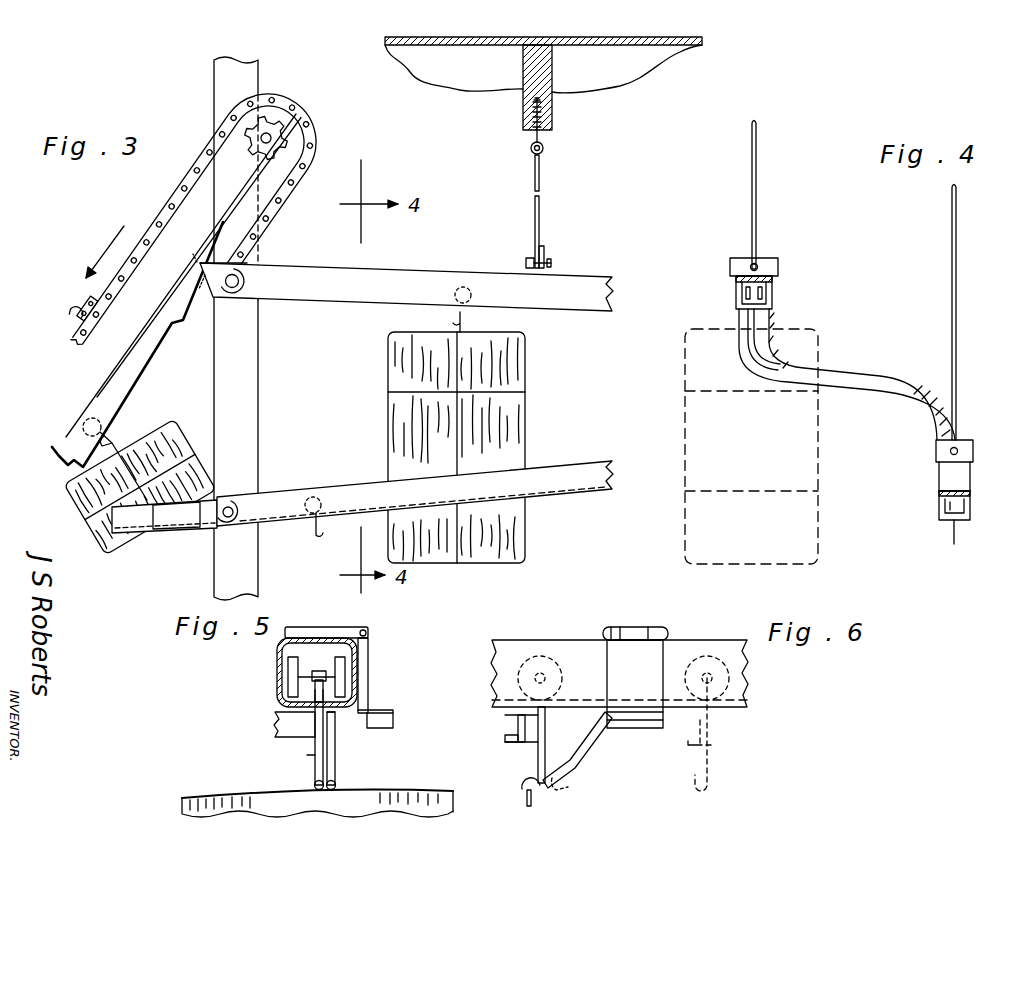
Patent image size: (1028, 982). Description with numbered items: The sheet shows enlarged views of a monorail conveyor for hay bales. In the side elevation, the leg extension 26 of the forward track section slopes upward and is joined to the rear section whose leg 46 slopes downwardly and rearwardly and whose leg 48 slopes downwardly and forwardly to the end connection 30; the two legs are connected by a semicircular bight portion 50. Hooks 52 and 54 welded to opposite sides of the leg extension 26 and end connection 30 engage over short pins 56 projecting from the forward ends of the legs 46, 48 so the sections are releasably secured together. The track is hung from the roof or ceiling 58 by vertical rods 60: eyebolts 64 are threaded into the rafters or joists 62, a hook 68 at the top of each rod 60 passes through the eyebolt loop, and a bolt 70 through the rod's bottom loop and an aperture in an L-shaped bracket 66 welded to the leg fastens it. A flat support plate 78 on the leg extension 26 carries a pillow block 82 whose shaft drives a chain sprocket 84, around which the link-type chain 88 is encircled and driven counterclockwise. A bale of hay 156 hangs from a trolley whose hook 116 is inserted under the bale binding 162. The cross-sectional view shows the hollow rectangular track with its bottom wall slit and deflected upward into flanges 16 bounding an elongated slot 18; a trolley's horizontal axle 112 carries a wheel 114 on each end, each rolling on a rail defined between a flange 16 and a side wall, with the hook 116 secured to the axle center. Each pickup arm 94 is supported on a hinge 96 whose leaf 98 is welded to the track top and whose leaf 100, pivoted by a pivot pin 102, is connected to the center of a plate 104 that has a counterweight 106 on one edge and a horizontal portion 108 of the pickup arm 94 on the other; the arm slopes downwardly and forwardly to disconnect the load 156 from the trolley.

In FIG. 5, the flanges 16 is at (308, 690).
In FIG. 4, the elongated slot 18 is at (746, 345).
In FIG. 5, the elongated slot 18 is at (294, 721).
In FIG. 3, the leg extension 26 is at (150, 372).
In FIG. 3, the end connection 30 is at (150, 536).
In FIG. 3, the leg 46 is at (380, 268).
In FIG. 4, the leg 46 is at (736, 293).
In FIG. 6, the leg 46 is at (728, 642).
In FIG. 3, the leg 48 is at (285, 492).
In FIG. 4, the leg 48 is at (970, 507).
In FIG. 4, the bight portion 50 is at (845, 378).
In FIG. 3, the hook 52 is at (246, 262).
In FIG. 3, the hook 54 is at (233, 501).
In FIG. 3, the pins 56 is at (232, 290).
In FIG. 3, the roof or ceiling 58 is at (660, 48).
In FIG. 3, the vertical rods 60 is at (540, 218).
In FIG. 4, the vertical rods 60 is at (757, 205).
In FIG. 3, the rafters or joists 62 is at (552, 112).
In FIG. 3, the eyebolts 64 is at (545, 147).
In FIG. 3, the L-shaped brackets 66 is at (544, 250).
In FIG. 4, the L-shaped brackets 66 is at (778, 268).
In FIG. 3, the hook 68 is at (540, 170).
In FIG. 3, the bolt 70 is at (552, 263).
In FIG. 3, the flat support plate 78 is at (197, 253).
In FIG. 3, the pillow block 82 is at (262, 134).
In FIG. 3, the chain sprocket 84 is at (286, 111).
In FIG. 3, the link-type chain 88 is at (143, 217).
In FIG. 5, the pickup arm 94 is at (337, 752).
In FIG. 6, the pickup arm 94 is at (580, 756).
In FIG. 5, the hinge 96 is at (370, 637).
In FIG. 5, the leaf 98 is at (296, 627).
In FIG. 6, the leaf 98 is at (632, 628).
In FIG. 5, the leaf 100 is at (368, 670).
In FIG. 6, the leaf 100 is at (661, 663).
In FIG. 5, the pivot pin 102 is at (360, 630).
In FIG. 6, the pivot pin 102 is at (603, 633).
In FIG. 5, the plate 104 is at (390, 710).
In FIG. 6, the plate 104 is at (636, 716).
In FIG. 5, the counterweight 106 is at (395, 722).
In FIG. 6, the counterweight 106 is at (607, 716).
In FIG. 5, the horizontal portion 108 is at (340, 720).
In FIG. 6, the horizontal axle 112 is at (503, 722).
In FIG. 5, the wheel 114 is at (288, 670).
In FIG. 5, the hook 116 is at (314, 755).
In FIG. 6, the hook 116 is at (545, 748).
In FIG. 3, the bale of hay 156 is at (118, 550).
In FIG. 4, the bale of hay 156 is at (820, 516).
In FIG. 6, the binding 162 is at (522, 794).